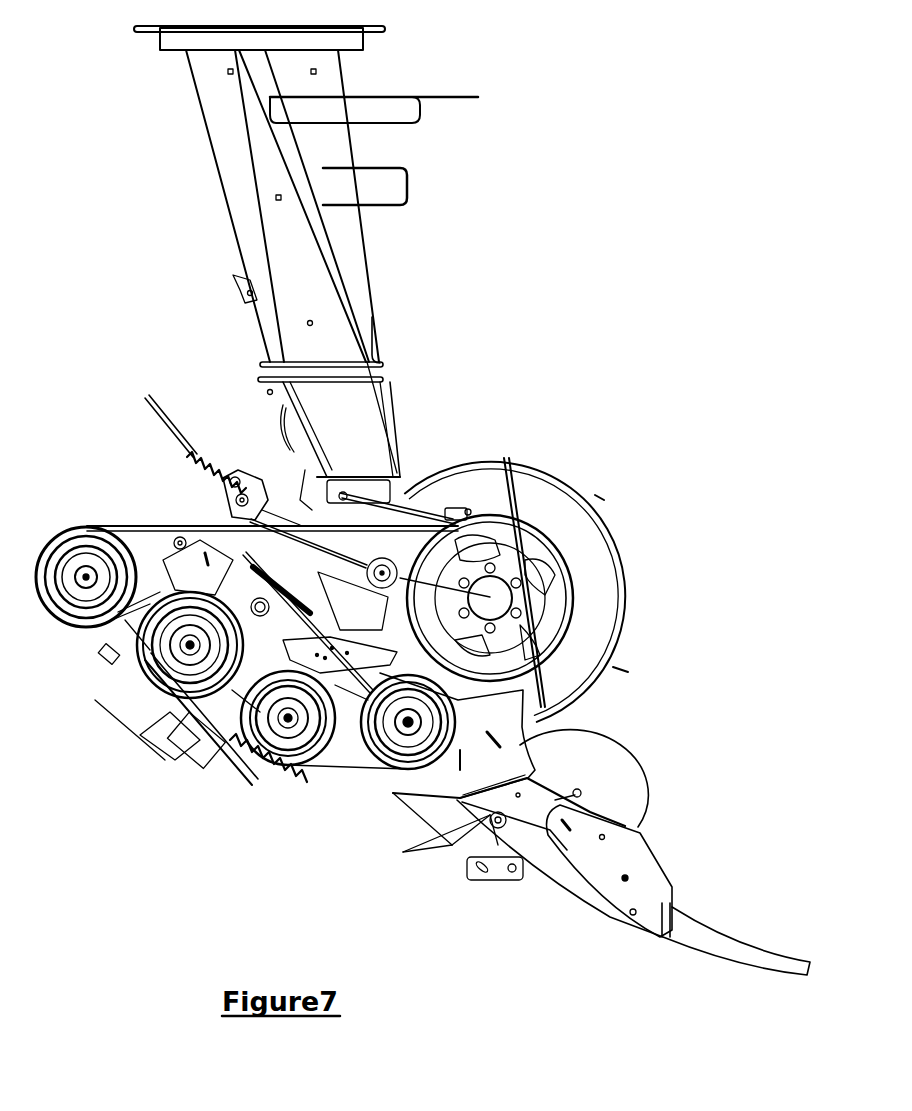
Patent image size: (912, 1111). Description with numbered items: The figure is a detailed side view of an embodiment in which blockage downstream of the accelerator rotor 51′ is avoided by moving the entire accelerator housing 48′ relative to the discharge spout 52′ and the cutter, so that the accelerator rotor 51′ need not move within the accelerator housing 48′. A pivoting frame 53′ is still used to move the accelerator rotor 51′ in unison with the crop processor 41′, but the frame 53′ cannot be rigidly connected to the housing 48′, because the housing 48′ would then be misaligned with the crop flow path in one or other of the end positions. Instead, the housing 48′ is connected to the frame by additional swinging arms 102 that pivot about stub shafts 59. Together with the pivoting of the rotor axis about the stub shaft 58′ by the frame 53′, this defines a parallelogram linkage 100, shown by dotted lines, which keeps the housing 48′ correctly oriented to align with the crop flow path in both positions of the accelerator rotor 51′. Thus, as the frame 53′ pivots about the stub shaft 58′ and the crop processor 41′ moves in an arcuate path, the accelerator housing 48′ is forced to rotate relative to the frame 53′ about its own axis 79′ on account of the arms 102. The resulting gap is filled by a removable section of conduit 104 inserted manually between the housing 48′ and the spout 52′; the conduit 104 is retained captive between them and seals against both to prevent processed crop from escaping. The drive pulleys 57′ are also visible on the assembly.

The discharge spout 52′ is at (304, 288).
The removable section of conduit 104 is at (363, 420).
The additional swinging arms 102 is at (410, 493).
The parallelogram linkage 100 is at (425, 500).
The stub shafts 59 is at (327, 507).
The stub shaft 58′ is at (233, 500).
The pivoting frame 53′ is at (237, 527).
The drive pulleys 57′ is at (290, 718).
The axis 79′ is at (490, 597).
The accelerator housing 48′ is at (560, 525).
The accelerator rotor 51′ is at (648, 642).
The crop processor 41′ is at (118, 708).